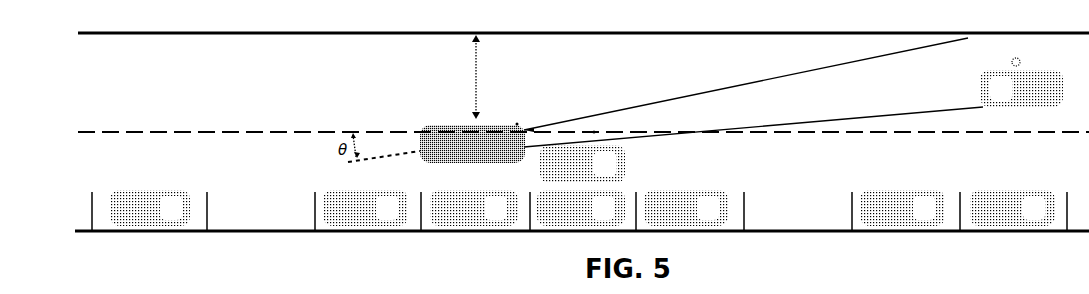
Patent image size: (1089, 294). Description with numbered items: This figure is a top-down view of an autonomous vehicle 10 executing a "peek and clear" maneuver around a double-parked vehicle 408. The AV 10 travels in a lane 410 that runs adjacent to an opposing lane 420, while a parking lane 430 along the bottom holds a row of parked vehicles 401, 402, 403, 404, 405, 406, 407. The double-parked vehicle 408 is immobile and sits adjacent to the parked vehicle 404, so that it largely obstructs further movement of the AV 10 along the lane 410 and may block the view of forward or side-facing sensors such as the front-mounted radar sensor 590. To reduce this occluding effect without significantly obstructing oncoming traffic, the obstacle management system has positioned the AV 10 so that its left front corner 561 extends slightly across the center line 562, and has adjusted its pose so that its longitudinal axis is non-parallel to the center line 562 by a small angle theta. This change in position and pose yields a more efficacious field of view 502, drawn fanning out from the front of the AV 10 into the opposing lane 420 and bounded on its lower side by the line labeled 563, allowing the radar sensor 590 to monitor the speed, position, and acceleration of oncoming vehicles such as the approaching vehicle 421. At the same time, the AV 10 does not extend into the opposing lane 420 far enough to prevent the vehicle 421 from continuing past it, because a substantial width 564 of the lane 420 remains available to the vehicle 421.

The autonomous vehicle 10 is at (472, 144).
The parked vehicle 401 is at (150, 208).
The parked vehicle 402 is at (365, 208).
The parked vehicle 403 is at (474, 208).
The parked vehicle 404 is at (581, 208).
The parked vehicle 405 is at (686, 208).
The parked vehicle 406 is at (902, 208).
The parked vehicle 407 is at (1012, 208).
The double-parked vehicle 408 is at (582, 164).
The lane 410 is at (583, 144).
The opposing lane 420 is at (583, 47).
The oncoming vehicle 421 is at (1021, 82).
The parking lane 430 is at (238, 214).
The field of view 502 is at (782, 75).
The left front corner 561 is at (516, 121).
The center line 562 is at (594, 129).
The lower field of view boundary 563 is at (545, 151).
The width of lane 564 is at (474, 74).
The front-mounted radar sensor 590 is at (528, 131).